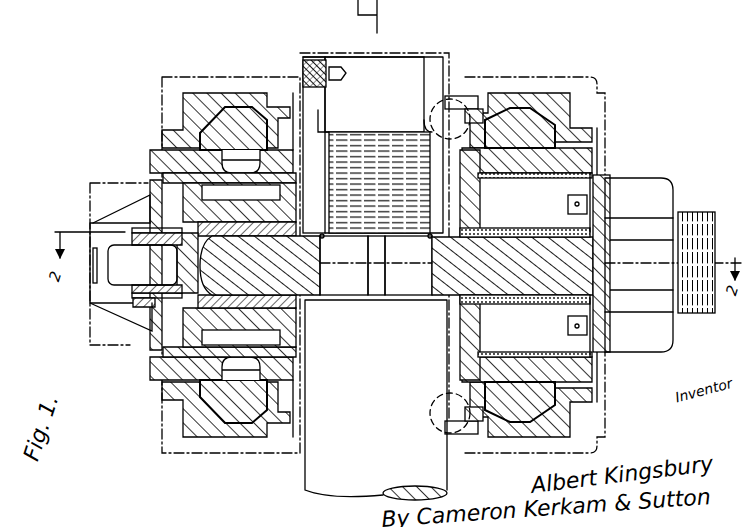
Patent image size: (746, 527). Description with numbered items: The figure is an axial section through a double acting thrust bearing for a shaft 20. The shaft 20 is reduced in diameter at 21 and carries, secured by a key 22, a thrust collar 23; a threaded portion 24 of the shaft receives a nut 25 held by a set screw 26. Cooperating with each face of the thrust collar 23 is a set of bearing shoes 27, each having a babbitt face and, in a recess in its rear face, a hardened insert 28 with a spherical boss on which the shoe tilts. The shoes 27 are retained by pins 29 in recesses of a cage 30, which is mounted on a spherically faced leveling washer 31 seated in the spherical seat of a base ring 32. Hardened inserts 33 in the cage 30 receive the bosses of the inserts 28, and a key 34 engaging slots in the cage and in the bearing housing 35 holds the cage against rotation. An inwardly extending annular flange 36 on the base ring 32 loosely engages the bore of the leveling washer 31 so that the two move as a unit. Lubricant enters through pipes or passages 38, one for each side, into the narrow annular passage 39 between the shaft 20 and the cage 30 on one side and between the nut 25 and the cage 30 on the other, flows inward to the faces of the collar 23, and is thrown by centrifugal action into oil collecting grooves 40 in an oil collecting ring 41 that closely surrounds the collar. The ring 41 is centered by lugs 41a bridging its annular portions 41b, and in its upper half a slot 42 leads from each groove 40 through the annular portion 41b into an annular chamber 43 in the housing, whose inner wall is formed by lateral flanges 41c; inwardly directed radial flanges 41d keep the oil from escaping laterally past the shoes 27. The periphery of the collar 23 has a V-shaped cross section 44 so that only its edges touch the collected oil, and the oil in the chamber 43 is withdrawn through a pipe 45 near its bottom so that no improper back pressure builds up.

The shaft 20 is at (320, 483).
The reduced diameter portion 21 is at (356, 286).
The key 22 is at (384, 283).
The thrust collar 23 is at (308, 298).
The threaded portion 24 is at (403, 150).
The nut 25 is at (319, 116).
The set screw 26 is at (316, 60).
The shoes 27 is at (521, 305).
The hardened insert 28 is at (192, 173).
The pins 29 is at (585, 350).
The cage 30 is at (458, 372).
The leveling washer 31 is at (226, 118).
The base ring 32 is at (190, 97).
The hardened inserts 33 is at (247, 157).
The key 34 is at (155, 180).
The bearing housing 35 is at (205, 208).
The annular flange 36 is at (292, 106).
The pipes or passages 38 is at (456, 94).
The annular passage 39 is at (458, 352).
The oil collecting grooves 40 is at (120, 365).
The oil collecting ring 41 is at (144, 263).
The centering lugs 41a is at (103, 268).
The annular portions 41b is at (165, 200).
The lateral flanges 41c is at (198, 226).
The radial flanges 41d is at (565, 178).
The slot or passage 42 is at (78, 328).
The annular chamber 43 is at (100, 192).
The V-shaped cross section 44 is at (552, 266).
The pipe 45 is at (690, 211).